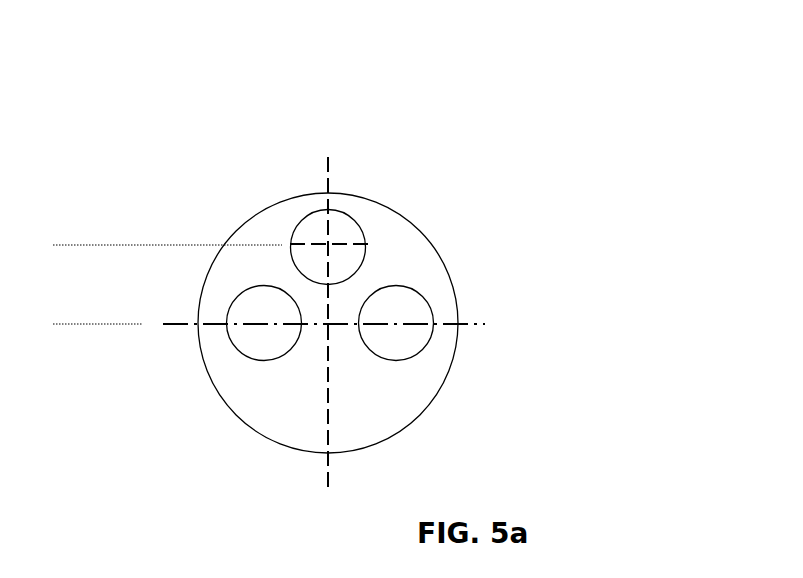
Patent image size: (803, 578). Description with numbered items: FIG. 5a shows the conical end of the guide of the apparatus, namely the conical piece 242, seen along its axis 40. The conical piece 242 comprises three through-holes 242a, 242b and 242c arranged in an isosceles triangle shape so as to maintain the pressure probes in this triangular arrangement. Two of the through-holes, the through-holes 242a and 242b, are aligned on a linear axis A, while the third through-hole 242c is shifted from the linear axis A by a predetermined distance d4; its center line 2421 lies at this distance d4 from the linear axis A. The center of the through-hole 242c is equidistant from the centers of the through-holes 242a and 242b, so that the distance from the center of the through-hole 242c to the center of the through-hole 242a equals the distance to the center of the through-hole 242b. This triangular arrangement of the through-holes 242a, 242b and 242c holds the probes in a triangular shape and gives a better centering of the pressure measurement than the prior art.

The central axis 40 is at (333, 157).
The conical piece 242 is at (415, 260).
The through-hole 242a is at (230, 347).
The through-hole 242b is at (428, 308).
The through-hole 242c is at (308, 213).
The hole center line 2421 is at (276, 242).
The linear axis A is at (492, 325).
The predetermined distance d4 is at (59, 245).